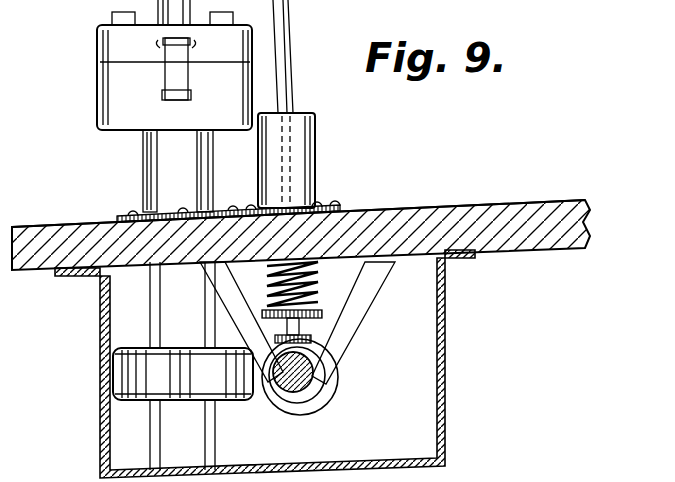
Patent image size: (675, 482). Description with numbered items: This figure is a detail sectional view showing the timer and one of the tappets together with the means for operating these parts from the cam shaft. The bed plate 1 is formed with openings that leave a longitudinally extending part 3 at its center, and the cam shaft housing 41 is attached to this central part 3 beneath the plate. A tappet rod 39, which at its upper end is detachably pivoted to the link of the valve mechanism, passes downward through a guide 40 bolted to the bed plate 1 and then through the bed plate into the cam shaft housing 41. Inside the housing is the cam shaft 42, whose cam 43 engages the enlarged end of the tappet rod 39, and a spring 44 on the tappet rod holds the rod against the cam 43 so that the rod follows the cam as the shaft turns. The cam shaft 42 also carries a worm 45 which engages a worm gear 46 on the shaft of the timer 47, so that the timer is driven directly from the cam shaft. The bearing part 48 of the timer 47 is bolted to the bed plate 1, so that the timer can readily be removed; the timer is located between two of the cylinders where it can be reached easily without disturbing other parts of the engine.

The bed plate 1 is at (502, 196).
The longitudinally extending part 3 is at (418, 216).
The tappet rod 39 is at (291, 14).
The guide 40 is at (306, 154).
The cam shaft housing 41 is at (440, 405).
The cam shaft 42 is at (318, 398).
The cam 43 is at (300, 410).
The spring 44 is at (320, 302).
The worm 45 is at (338, 378).
The worm gear 46 is at (250, 400).
The timer 47 is at (110, 132).
The bearing part 48 is at (157, 183).